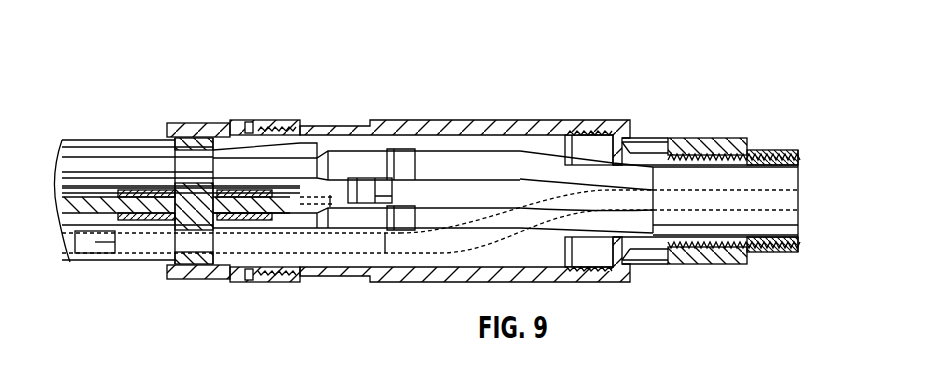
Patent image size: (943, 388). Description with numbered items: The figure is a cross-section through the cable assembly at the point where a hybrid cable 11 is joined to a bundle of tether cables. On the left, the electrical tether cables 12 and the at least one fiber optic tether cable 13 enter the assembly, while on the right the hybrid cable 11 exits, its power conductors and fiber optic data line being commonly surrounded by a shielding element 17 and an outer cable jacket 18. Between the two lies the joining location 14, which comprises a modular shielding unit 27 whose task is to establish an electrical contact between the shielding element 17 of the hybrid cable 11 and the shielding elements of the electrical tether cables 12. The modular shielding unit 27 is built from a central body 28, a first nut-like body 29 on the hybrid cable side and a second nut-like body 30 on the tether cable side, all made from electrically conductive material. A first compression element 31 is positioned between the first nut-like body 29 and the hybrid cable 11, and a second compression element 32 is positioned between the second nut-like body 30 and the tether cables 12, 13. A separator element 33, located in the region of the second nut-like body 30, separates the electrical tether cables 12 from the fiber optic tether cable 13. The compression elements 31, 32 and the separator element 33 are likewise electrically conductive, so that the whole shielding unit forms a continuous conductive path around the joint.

The electrical tether cable 12 is at (242, 157).
The fiber optic tether cable 13 is at (75, 132).
The joining location 14 is at (465, 90).
The modular shielding unit 27 is at (438, 112).
The central body 28 is at (430, 273).
The second nut-like body 30 is at (188, 130).
The second compression element 32 is at (275, 137).
The first compression element 31 is at (635, 137).
The first nut-like body 29 is at (712, 150).
The outer cable jacket 18 is at (788, 150).
The shielding element 17 is at (778, 252).
The hybrid cable 11 is at (758, 258).
The separator element 33 is at (182, 215).